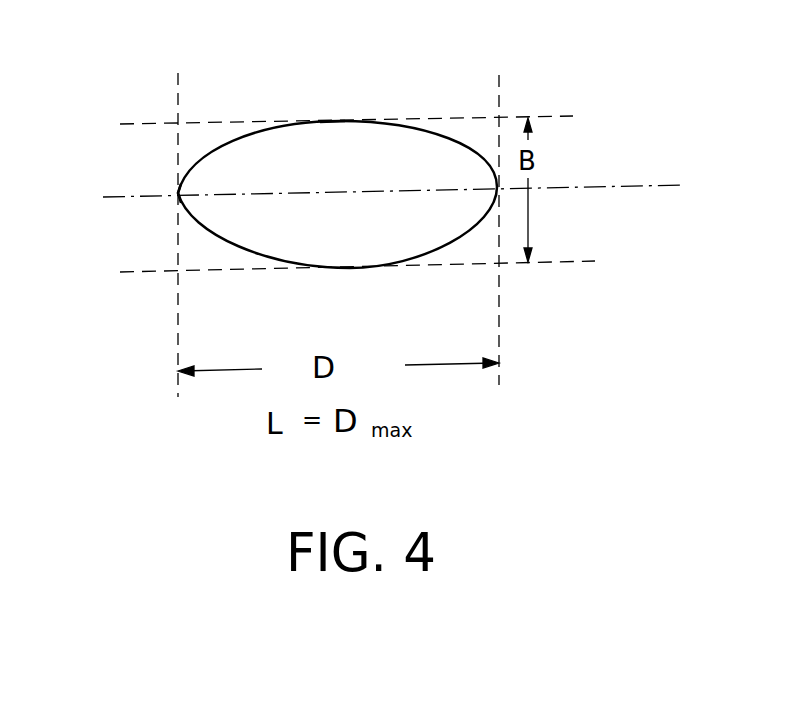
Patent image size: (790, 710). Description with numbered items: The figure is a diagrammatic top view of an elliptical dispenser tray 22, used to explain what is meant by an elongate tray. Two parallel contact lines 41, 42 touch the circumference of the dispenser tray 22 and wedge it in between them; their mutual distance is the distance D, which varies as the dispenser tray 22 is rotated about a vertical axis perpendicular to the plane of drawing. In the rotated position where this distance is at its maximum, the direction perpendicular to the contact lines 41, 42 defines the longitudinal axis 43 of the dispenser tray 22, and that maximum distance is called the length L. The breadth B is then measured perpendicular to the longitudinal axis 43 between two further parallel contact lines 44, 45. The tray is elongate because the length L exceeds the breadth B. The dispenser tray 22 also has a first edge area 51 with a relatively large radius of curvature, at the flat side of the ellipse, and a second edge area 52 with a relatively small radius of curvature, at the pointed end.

The dispenser tray 22 is at (362, 144).
The first edge area 51 is at (330, 122).
The second edge area 52 is at (178, 193).
The contact line 41 is at (178, 330).
The contact line 42 is at (500, 316).
The longitudinal axis 43 is at (667, 186).
The contact line 44 is at (565, 262).
The contact line 45 is at (548, 118).